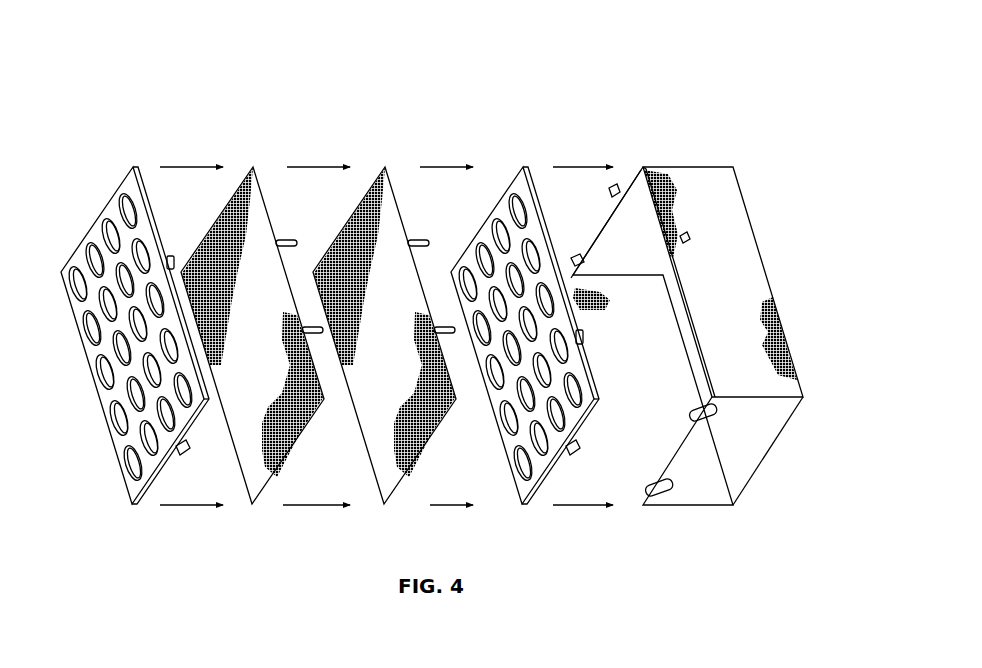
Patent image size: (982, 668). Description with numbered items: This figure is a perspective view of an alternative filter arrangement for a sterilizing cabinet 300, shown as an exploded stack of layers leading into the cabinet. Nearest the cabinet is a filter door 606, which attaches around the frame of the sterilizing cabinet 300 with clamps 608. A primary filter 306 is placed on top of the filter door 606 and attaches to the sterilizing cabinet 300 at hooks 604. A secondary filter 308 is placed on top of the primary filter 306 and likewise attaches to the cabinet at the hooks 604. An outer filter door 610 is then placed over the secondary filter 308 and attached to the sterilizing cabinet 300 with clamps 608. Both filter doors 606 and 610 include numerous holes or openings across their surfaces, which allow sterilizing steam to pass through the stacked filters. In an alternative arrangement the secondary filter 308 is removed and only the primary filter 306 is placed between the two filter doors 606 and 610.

The sterilizing cabinet 300 is at (683, 173).
The primary filter 306 is at (385, 170).
The secondary filter 308 is at (253, 170).
The hooks 604 is at (686, 242).
The filter door 606 is at (512, 175).
The clamps 608 is at (183, 452).
The filter door 610 is at (110, 200).